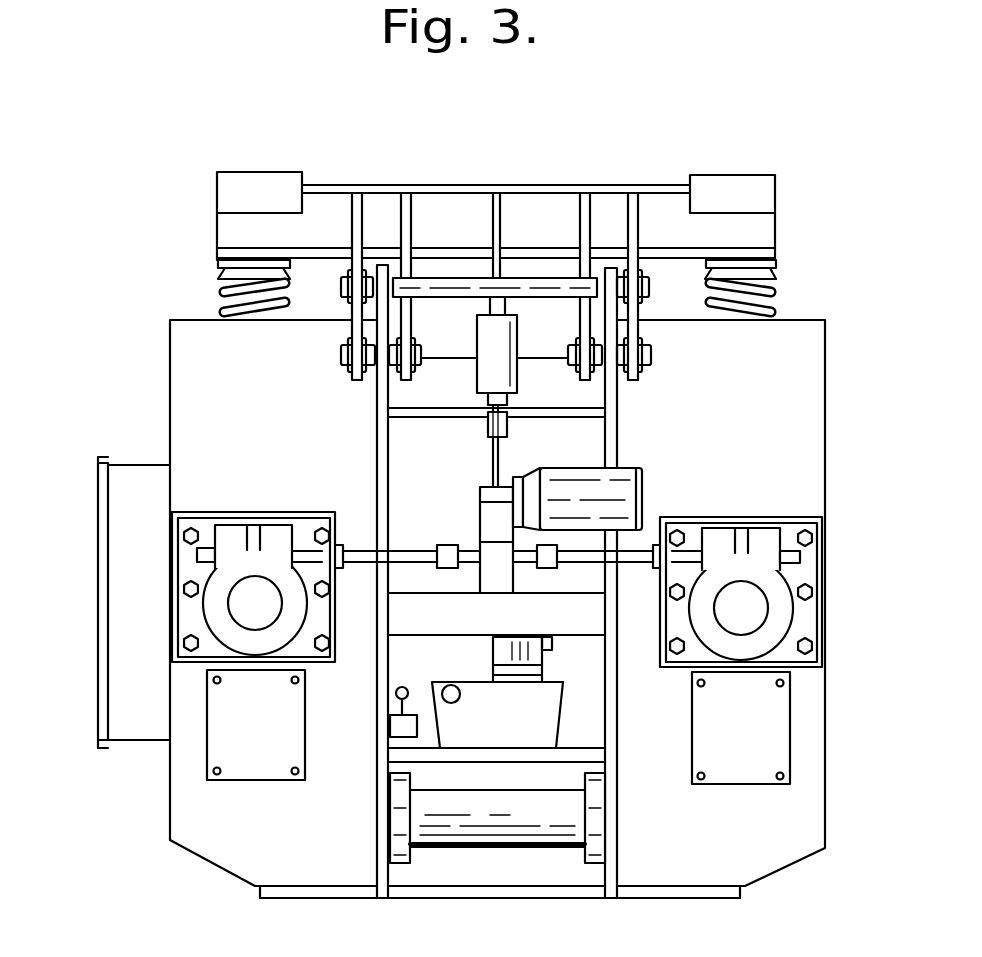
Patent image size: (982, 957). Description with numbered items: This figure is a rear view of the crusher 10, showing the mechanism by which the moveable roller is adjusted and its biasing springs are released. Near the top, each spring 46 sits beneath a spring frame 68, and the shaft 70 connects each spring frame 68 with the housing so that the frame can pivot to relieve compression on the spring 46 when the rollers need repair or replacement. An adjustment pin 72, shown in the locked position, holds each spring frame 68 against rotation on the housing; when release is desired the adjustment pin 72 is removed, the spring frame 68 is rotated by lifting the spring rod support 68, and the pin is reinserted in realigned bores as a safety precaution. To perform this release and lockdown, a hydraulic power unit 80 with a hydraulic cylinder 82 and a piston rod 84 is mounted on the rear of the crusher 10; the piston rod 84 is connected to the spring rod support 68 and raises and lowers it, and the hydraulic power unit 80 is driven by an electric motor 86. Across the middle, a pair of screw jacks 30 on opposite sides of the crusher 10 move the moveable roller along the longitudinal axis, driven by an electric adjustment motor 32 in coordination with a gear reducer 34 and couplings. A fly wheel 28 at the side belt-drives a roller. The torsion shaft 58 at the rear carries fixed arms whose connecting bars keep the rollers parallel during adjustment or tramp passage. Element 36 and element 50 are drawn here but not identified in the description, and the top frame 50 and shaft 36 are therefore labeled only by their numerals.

The crusher 10 is at (671, 151).
The fly wheel 28 is at (98, 576).
The screw jack 30 is at (233, 540).
The adjustment motor 32 is at (632, 478).
The gear reducer 34 is at (490, 577).
The drive shaft 36 is at (447, 548).
The spring 46 is at (217, 292).
The top frame 50 is at (777, 184).
The torsion shaft 58 is at (518, 836).
The spring frame 68 is at (357, 215).
The shaft 70 is at (437, 282).
The adjustment pin 72 is at (342, 355).
The hydraulic power unit 80 is at (517, 737).
The hydraulic cylinder 82 is at (481, 340).
The piston rod 84 is at (490, 395).
The electric motor 86 is at (493, 652).